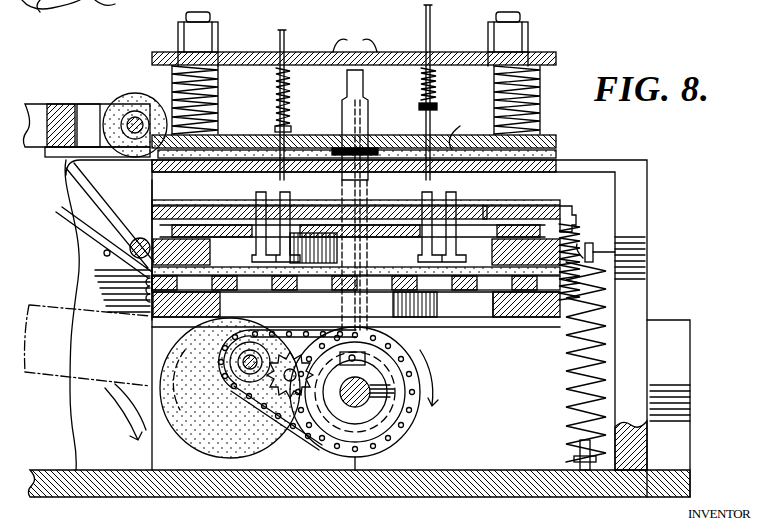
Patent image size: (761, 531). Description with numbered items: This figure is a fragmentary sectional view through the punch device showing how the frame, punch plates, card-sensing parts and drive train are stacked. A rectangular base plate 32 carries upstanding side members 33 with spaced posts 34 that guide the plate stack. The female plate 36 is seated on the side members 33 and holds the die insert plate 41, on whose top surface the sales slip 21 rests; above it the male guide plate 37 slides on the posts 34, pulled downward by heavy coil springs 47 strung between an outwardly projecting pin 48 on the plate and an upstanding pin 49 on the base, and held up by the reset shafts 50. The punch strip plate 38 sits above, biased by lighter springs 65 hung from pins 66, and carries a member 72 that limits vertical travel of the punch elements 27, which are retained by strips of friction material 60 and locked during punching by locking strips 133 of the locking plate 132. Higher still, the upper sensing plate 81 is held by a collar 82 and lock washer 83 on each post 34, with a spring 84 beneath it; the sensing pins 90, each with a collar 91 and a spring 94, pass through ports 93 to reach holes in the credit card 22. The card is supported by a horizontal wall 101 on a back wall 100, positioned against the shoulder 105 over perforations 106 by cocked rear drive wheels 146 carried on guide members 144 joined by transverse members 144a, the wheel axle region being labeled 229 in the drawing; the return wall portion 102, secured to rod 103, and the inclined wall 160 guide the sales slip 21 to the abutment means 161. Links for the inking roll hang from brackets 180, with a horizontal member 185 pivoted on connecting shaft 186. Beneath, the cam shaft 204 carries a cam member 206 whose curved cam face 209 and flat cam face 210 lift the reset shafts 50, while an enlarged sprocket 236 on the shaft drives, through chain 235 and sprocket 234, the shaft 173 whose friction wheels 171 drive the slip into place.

The sales slip 21 is at (356, 270).
The credit card 22 is at (209, 155).
The punch element 27 is at (437, 195).
The base plate 32 is at (223, 497).
The side member 33 is at (690, 359).
The post 34 is at (189, 20).
The female plate 36 is at (547, 318).
The male guide plate 37 is at (148, 283).
The punch strip plate 38 is at (150, 214).
The die insert plate 41 is at (504, 320).
The biasing coil spring 47 is at (599, 347).
The outwardly projecting pin 48 is at (617, 253).
The upstanding pin 49 is at (580, 462).
The reset shaft 50 is at (355, 110).
The strip of friction material 60 is at (459, 243).
The spring 65 is at (574, 240).
The outwardly projecting pin 66 is at (564, 212).
The member 72 is at (534, 206).
The upper sensing plate 81 is at (555, 58).
The collar 82 is at (178, 40).
The lock washer 83 is at (211, 25).
The spring 84 is at (217, 90).
The sensing pin 90 is at (283, 36).
The collar 91 is at (289, 128).
The port 93 is at (355, 37).
The spring 94 is at (287, 93).
The back wall 100 is at (647, 214).
The horizontal wall 101 is at (584, 170).
The return wall portion 102 is at (80, 205).
The rod 103 is at (138, 240).
The transverse shoulder 105 is at (450, 146).
The perforation 106 is at (376, 160).
The locking plate 132 is at (212, 262).
The locking strip 133 is at (383, 269).
The guide member 144 is at (35, 108).
The transverse member 144a is at (58, 106).
The rear frictional drive wheel 146 is at (145, 100).
The inclined wall 160 is at (103, 253).
The abutment means 161 is at (519, 324).
The friction wheel 171 is at (150, 452).
The shaft 173 is at (254, 346).
The bracket 180 is at (106, 4).
The horizontal member 185 is at (82, 10).
The connecting shaft 186 is at (46, 17).
The cam shaft 204 is at (363, 390).
The cam member 206 is at (410, 432).
The curved cam face 209 is at (436, 404).
The flat cam face 210 is at (373, 348).
The roller axle 229 is at (131, 119).
The sprocket 234 is at (257, 390).
The chain 235 is at (372, 457).
The enlarged sprocket 236 is at (316, 342).